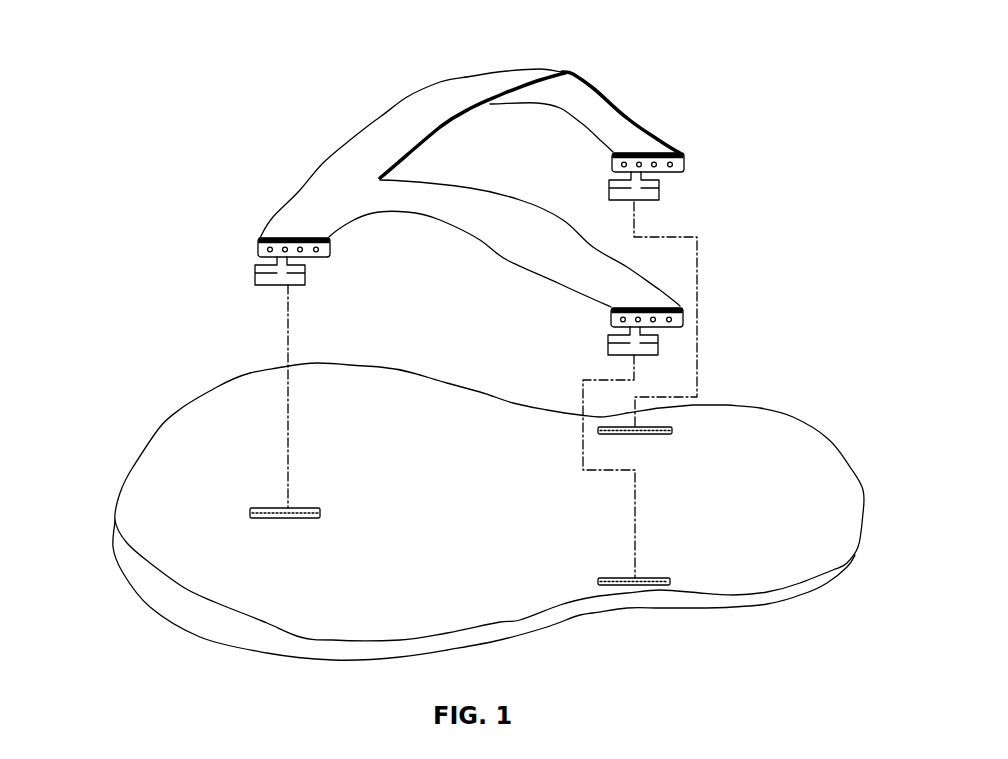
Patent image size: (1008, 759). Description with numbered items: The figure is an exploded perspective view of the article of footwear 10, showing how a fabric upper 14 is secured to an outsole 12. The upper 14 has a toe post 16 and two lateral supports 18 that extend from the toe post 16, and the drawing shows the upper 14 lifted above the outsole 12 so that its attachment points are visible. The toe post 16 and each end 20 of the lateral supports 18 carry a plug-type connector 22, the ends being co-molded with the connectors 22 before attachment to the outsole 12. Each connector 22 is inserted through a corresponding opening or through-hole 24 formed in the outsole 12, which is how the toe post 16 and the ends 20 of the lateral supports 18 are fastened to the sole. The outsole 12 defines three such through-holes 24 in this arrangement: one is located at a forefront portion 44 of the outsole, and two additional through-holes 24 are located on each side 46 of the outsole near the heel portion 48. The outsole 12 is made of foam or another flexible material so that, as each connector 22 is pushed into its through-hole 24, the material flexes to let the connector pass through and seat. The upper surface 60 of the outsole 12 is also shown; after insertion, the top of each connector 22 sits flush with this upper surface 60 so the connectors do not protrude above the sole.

The article of footwear 10 is at (122, 72).
The outsole 12 is at (813, 442).
The fabric upper 14 is at (390, 72).
The toe post 16 is at (302, 215).
The lateral supports 18 is at (480, 88).
The end 20 is at (645, 132).
The plug-type connector 22 is at (278, 260).
The through-holes 24 is at (305, 508).
The forefront portion 44 is at (172, 453).
The side 46 is at (500, 633).
The heel portion 48 is at (843, 490).
The upper surface 60 is at (507, 518).